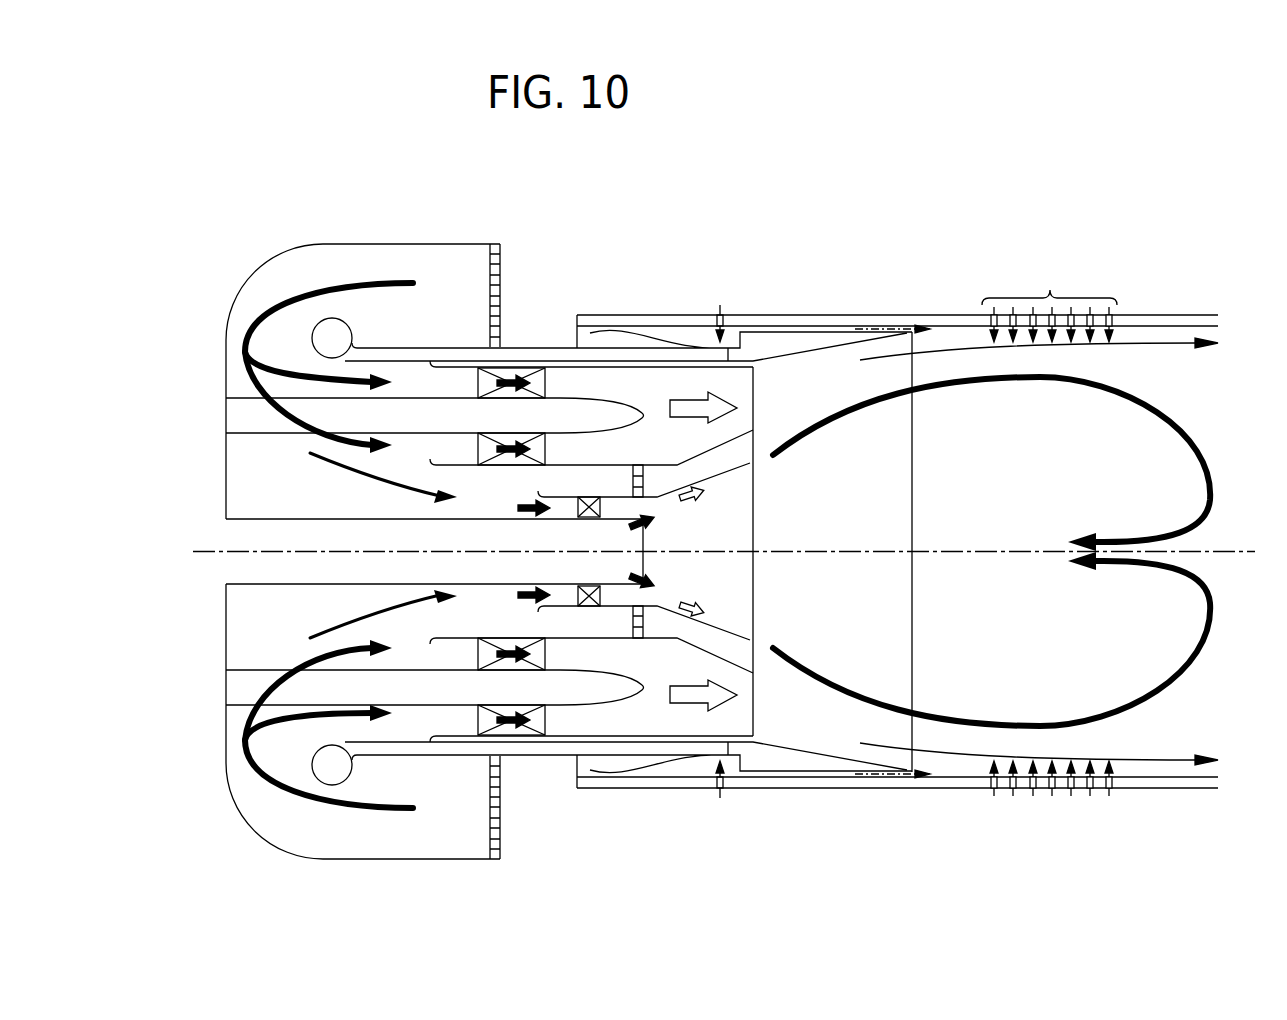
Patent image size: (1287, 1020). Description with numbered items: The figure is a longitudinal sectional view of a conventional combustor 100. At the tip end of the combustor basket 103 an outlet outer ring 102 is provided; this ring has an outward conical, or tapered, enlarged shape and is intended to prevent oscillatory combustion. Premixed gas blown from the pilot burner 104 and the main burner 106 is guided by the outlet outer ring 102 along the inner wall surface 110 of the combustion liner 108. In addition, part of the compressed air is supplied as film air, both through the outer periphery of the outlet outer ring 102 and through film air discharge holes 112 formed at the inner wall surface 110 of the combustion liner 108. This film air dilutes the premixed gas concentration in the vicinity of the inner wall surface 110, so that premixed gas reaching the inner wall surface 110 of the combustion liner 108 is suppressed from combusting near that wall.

The combustor 100 is at (784, 192).
The outlet outer ring 102 is at (892, 478).
The combustor basket 103 is at (540, 347).
The pilot burner 104 is at (735, 523).
The main burner 106 is at (735, 384).
The combustion liner 108 is at (1170, 315).
The inner wall surface 110 is at (1155, 327).
The film air discharge holes 112 is at (1049, 525).